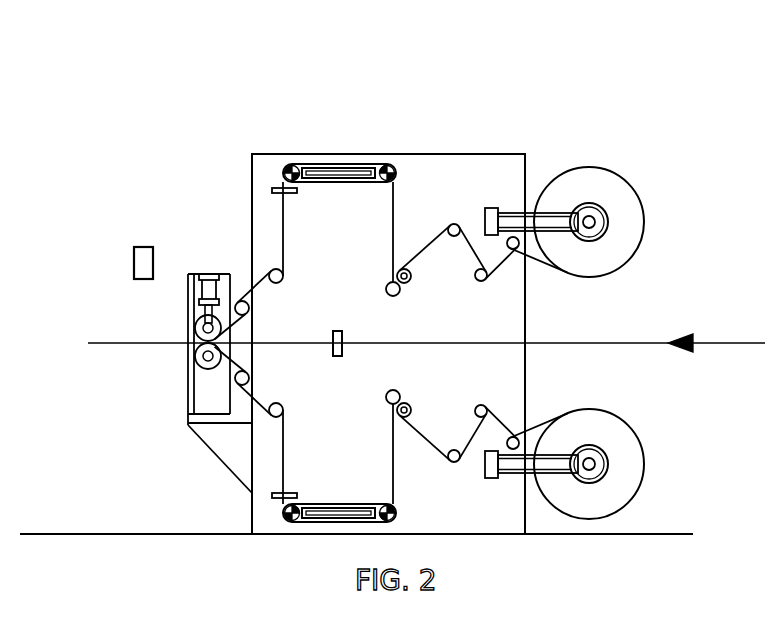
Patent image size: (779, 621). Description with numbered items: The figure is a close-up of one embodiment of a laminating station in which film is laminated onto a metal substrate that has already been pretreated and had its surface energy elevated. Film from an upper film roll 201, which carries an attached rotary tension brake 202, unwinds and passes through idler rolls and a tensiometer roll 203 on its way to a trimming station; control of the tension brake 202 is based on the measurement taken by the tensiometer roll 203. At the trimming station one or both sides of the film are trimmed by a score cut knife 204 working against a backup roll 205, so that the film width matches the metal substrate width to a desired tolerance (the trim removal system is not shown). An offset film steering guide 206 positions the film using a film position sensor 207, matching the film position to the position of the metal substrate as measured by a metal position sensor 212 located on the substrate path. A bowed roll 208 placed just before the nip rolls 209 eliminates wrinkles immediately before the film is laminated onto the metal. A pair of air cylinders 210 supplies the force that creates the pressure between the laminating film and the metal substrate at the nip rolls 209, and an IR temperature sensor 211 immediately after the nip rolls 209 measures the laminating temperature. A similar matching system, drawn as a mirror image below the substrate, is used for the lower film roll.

The upper film roll 201 is at (610, 182).
The rotary tension brake 202 is at (613, 222).
The tensiometer roll 203 is at (492, 280).
The score cut knife 204 is at (407, 297).
The backup roll 205 is at (407, 268).
The offset film steering guide 206 is at (340, 166).
The film position sensor 207 is at (272, 188).
The bowed roll 208 is at (242, 300).
The nip rolls 209 is at (196, 330).
The air cylinders 210 is at (209, 270).
The IR temperature sensor 211 is at (142, 246).
The metal position sensor 212 is at (348, 358).